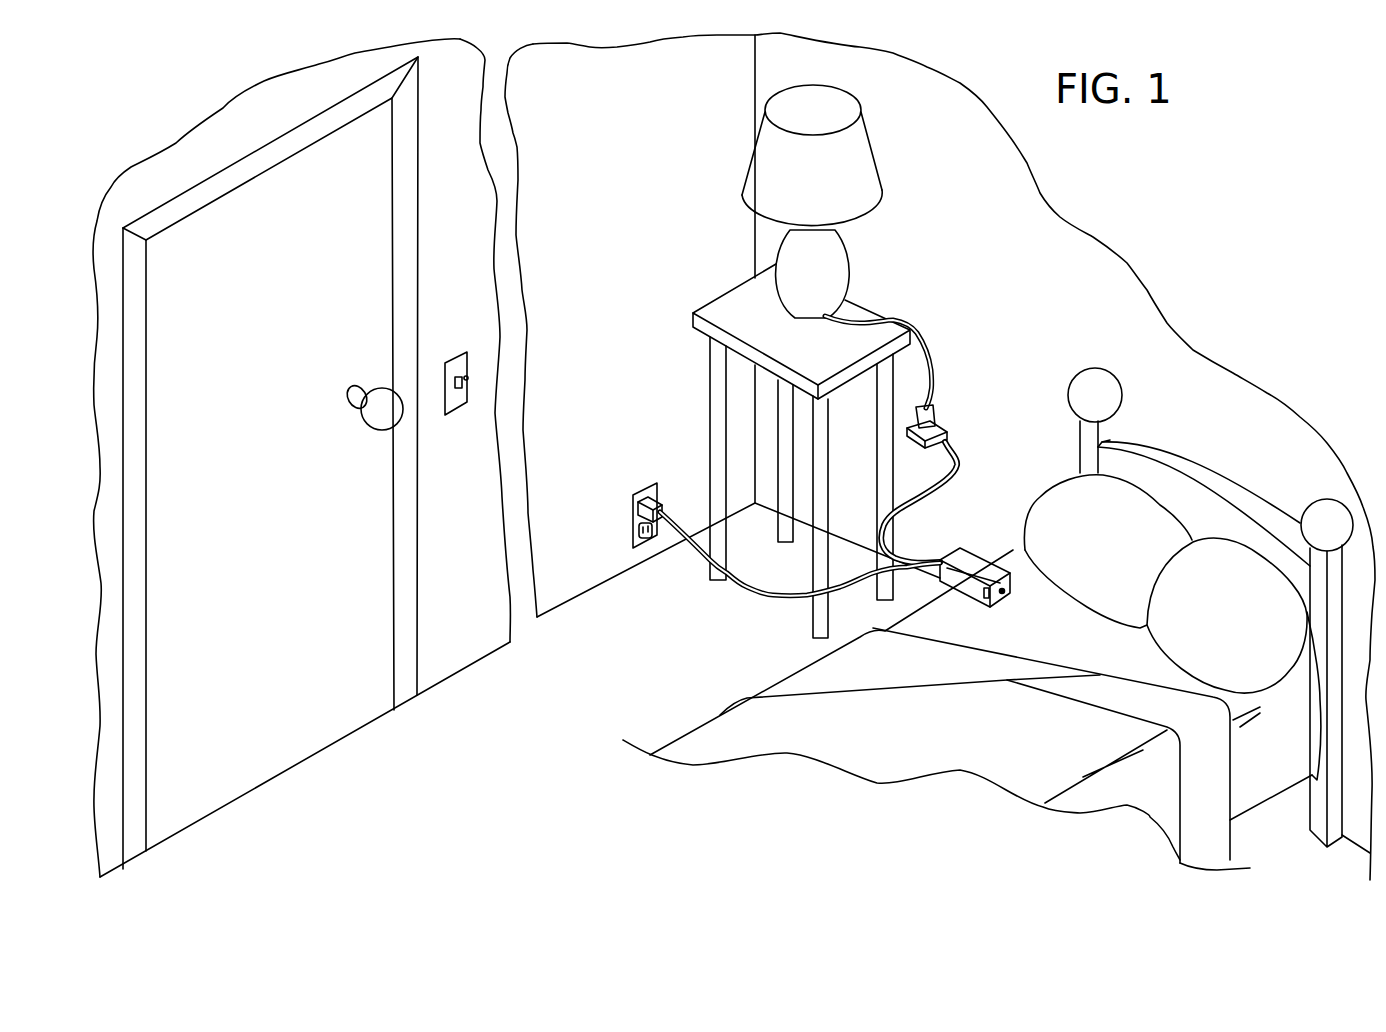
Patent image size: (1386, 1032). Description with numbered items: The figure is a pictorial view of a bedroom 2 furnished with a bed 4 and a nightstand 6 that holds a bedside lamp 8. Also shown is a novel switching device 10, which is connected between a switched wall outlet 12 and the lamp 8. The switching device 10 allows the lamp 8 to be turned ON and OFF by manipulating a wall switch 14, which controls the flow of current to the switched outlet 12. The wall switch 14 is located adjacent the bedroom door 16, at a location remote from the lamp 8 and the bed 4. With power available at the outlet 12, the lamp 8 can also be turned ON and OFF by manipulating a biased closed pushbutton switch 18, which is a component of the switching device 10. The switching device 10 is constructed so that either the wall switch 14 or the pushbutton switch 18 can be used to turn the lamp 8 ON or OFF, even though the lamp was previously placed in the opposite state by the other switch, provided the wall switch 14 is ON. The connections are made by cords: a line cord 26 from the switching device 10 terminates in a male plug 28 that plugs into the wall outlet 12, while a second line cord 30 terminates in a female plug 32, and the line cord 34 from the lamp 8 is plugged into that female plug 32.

The bedroom 2 is at (940, 243).
The bed 4 is at (688, 713).
The nightstand 6 is at (728, 286).
The bedside lamp 8 is at (743, 160).
The switching device 10 is at (973, 542).
The switched wall outlet 12 is at (638, 527).
The wall switch 14 is at (440, 372).
The bedroom door 16 is at (417, 465).
The pushbutton switch 18 is at (1004, 593).
The line cord 26 is at (767, 598).
The male plug 28 is at (637, 512).
The second line cord 30 is at (960, 462).
The female plug 32 is at (942, 427).
The lamp line cord 34 is at (933, 341).